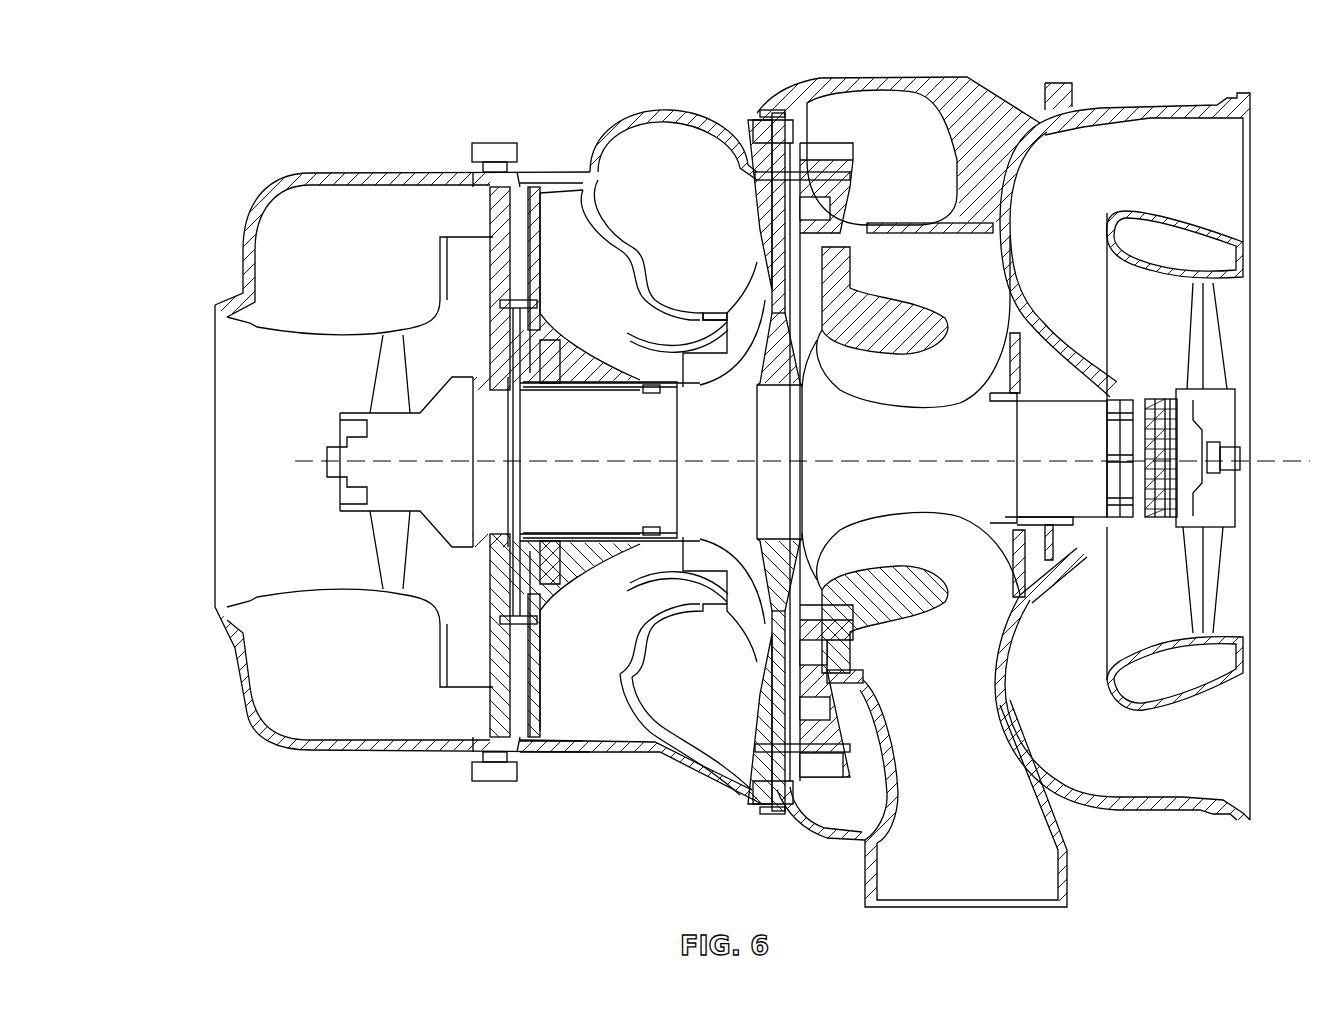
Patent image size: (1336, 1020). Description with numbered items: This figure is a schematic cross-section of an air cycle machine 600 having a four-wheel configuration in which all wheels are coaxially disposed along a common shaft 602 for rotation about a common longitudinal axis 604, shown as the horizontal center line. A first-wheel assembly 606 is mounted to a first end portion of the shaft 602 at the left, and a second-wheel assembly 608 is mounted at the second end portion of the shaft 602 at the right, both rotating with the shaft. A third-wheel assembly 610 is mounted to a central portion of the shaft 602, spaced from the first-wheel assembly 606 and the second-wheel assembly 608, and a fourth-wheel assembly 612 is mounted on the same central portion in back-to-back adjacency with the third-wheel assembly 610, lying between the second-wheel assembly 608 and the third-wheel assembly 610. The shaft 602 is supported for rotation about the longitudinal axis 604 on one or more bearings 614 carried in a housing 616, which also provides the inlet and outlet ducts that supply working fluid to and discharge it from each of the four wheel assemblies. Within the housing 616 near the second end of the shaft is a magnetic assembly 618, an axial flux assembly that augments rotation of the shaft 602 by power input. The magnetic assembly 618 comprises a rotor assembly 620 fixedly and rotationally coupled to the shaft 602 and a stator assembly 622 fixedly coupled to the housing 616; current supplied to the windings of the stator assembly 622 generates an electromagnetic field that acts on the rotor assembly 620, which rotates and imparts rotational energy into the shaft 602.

The air cycle machine 600 is at (167, 72).
The shaft 602 is at (652, 501).
The longitudinal axis 604 is at (1267, 453).
The first-wheel assembly 606 is at (463, 390).
The second-wheel assembly 608 is at (1205, 388).
The third-wheel assembly 610 is at (747, 357).
The fourth-wheel assembly 612 is at (870, 393).
The bearing 614 is at (560, 380).
The housing 616 is at (650, 106).
The magnetic assembly 618 is at (1115, 470).
The rotor assembly 620 is at (1130, 399).
The stator assembly 622 is at (1160, 517).